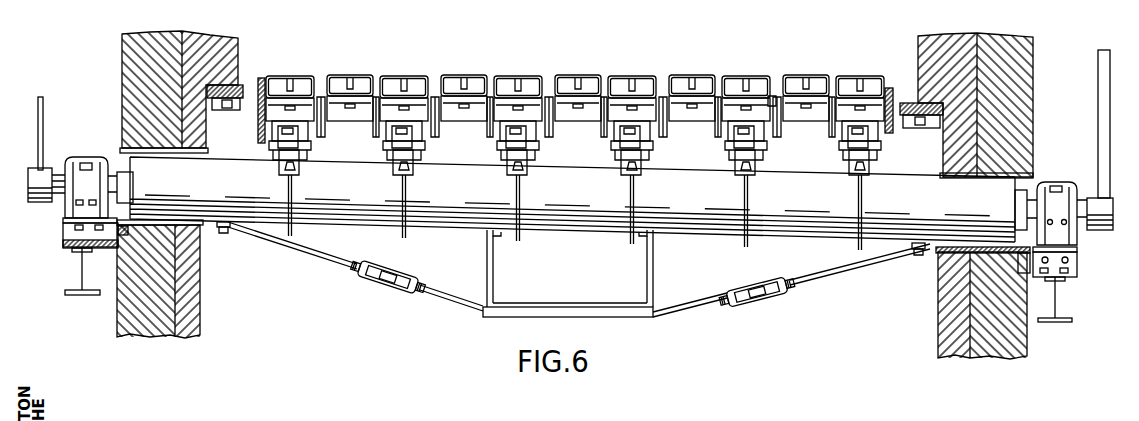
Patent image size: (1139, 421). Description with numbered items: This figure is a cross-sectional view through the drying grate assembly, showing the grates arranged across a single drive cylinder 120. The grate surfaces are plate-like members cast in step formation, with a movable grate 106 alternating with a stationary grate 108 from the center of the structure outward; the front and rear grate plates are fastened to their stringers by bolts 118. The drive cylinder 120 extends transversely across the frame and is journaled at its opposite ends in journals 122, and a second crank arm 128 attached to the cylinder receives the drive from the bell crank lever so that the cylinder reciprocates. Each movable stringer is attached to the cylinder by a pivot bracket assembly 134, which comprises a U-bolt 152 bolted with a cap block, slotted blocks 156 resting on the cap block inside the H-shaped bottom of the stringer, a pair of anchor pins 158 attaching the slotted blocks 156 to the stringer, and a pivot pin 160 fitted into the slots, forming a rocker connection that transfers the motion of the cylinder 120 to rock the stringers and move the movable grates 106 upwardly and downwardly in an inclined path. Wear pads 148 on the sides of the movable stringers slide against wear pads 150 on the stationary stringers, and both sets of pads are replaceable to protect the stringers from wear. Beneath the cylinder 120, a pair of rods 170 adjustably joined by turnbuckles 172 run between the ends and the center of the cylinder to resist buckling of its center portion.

The movable grate 106 is at (284, 76).
The stationary grate 108 is at (342, 75).
The bolts 118 is at (527, 92).
The drive cylinder 120 is at (465, 197).
The journals 122 is at (1067, 190).
The second crank arm 128 is at (1098, 110).
The pivot bracket assembly 134 is at (283, 168).
The wear pads 148 is at (375, 97).
The wear pads 150 is at (772, 96).
The U-bolt 152 is at (293, 197).
The slotted blocks 156 is at (278, 124).
The anchor pins 158 is at (282, 131).
The pivot pin 160 is at (275, 146).
The rods 170 is at (428, 293).
The turnbuckles 172 is at (384, 273).